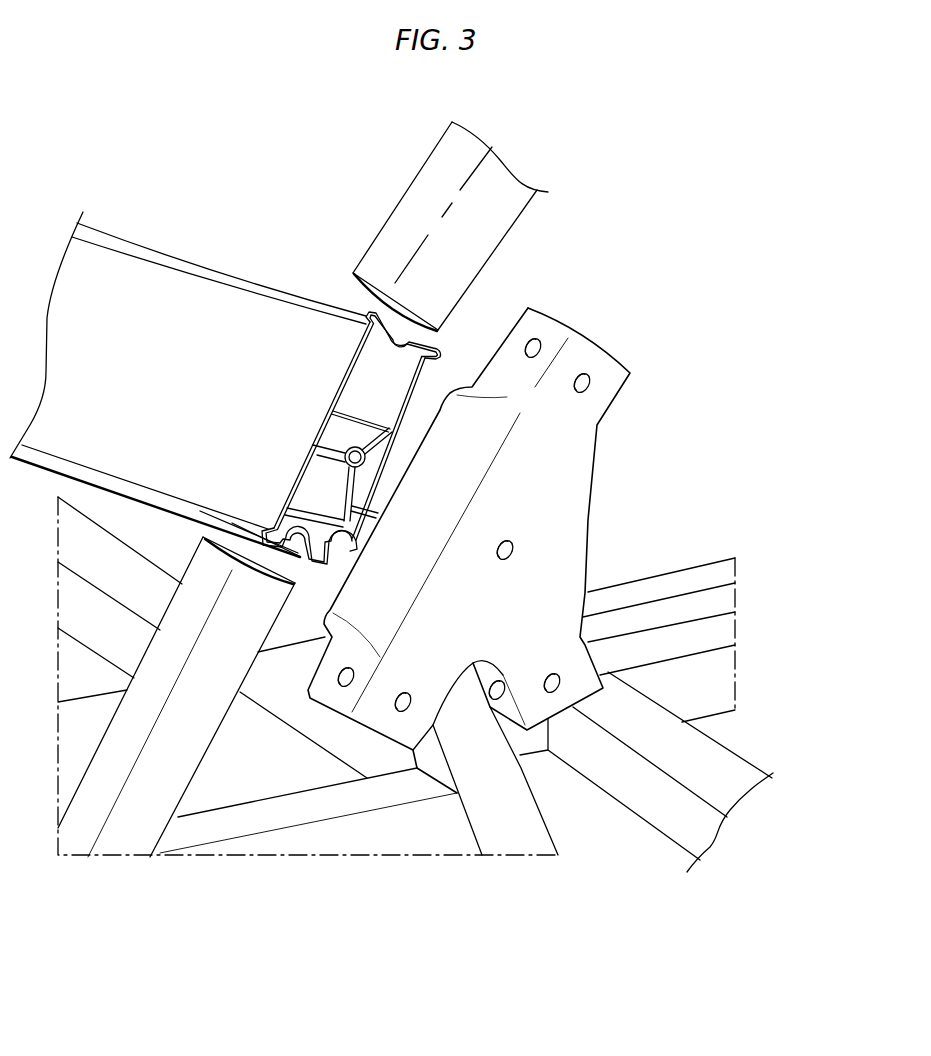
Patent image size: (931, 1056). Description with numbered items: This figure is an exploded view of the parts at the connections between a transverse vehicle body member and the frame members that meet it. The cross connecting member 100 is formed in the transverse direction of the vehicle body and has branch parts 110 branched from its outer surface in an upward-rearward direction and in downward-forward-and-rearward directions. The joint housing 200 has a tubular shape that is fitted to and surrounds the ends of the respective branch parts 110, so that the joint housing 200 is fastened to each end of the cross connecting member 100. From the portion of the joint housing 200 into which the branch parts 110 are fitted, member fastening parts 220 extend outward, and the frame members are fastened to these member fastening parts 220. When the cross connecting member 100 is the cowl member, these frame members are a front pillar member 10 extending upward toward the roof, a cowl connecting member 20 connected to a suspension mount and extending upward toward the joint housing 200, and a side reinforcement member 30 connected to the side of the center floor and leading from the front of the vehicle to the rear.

The front pillar member 10 is at (433, 190).
The cowl connecting member 20 is at (148, 800).
The side reinforcement member 30 is at (507, 820).
The cross connecting member 100 is at (129, 236).
The branch parts 110 is at (187, 317).
The joint housing 200 is at (565, 482).
The member fastening parts 220 is at (592, 362).